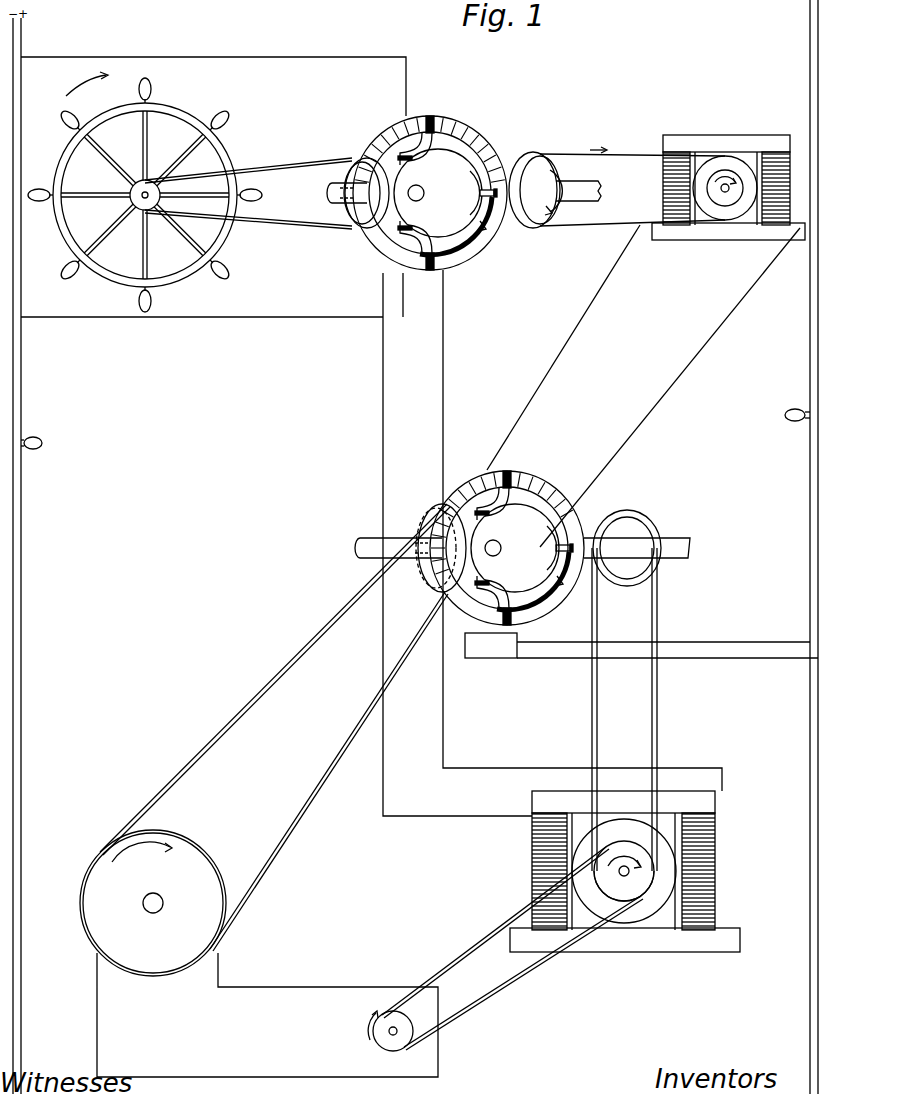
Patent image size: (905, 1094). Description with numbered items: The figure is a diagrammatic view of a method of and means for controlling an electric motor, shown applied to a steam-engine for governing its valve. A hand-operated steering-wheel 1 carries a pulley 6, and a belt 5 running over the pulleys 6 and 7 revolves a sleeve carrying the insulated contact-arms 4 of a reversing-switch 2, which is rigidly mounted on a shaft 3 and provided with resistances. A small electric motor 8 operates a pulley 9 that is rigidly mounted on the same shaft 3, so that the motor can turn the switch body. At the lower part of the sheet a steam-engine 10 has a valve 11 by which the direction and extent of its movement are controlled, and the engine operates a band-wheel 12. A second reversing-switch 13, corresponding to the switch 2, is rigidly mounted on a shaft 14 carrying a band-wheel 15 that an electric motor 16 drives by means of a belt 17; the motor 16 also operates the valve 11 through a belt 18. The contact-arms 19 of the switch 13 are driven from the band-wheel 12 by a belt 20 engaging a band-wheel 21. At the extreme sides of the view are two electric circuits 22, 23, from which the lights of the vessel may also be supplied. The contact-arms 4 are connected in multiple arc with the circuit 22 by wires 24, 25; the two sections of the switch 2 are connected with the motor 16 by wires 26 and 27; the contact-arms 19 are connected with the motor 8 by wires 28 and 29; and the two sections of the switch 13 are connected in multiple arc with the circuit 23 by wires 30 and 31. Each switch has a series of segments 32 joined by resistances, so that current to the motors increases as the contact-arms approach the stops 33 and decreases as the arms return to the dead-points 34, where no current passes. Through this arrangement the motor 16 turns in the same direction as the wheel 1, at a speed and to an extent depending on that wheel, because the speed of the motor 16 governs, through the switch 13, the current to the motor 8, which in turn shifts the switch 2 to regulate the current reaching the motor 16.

The steering-wheel 1 is at (222, 153).
The reversing-switch 2 is at (480, 128).
The shaft 3 is at (598, 188).
The contact-arms 4 is at (425, 214).
The belt 5 is at (278, 164).
The pulley 6 is at (148, 182).
The pulley 7 is at (336, 176).
The electric motor 8 is at (723, 140).
The pulley 9 is at (548, 156).
The steam-engine 10 is at (307, 985).
The valve 11 is at (400, 1016).
The band-wheel 12 is at (160, 878).
The reversing-switch 13 is at (570, 500).
The shaft 14 is at (685, 536).
The band-wheel 15 is at (612, 524).
The electric motor 16 is at (715, 858).
The belt 17 is at (657, 720).
The belt 18 is at (495, 995).
The contact-arms 19 is at (489, 513).
The belt 20 is at (282, 650).
The band-wheel 21 is at (432, 572).
The electric circuit 22 is at (22, 565).
The electric circuit 23 is at (808, 484).
The wire 24 is at (296, 56).
The wire 25 is at (235, 316).
The wire 26 is at (443, 357).
The wire 27 is at (383, 395).
The wire 28 is at (556, 358).
The wire 29 is at (642, 423).
The wire 30 is at (663, 632).
The wire 31 is at (641, 654).
The segments 32 is at (455, 118).
The stops 33 is at (480, 193).
The dead-points 34 is at (432, 116).